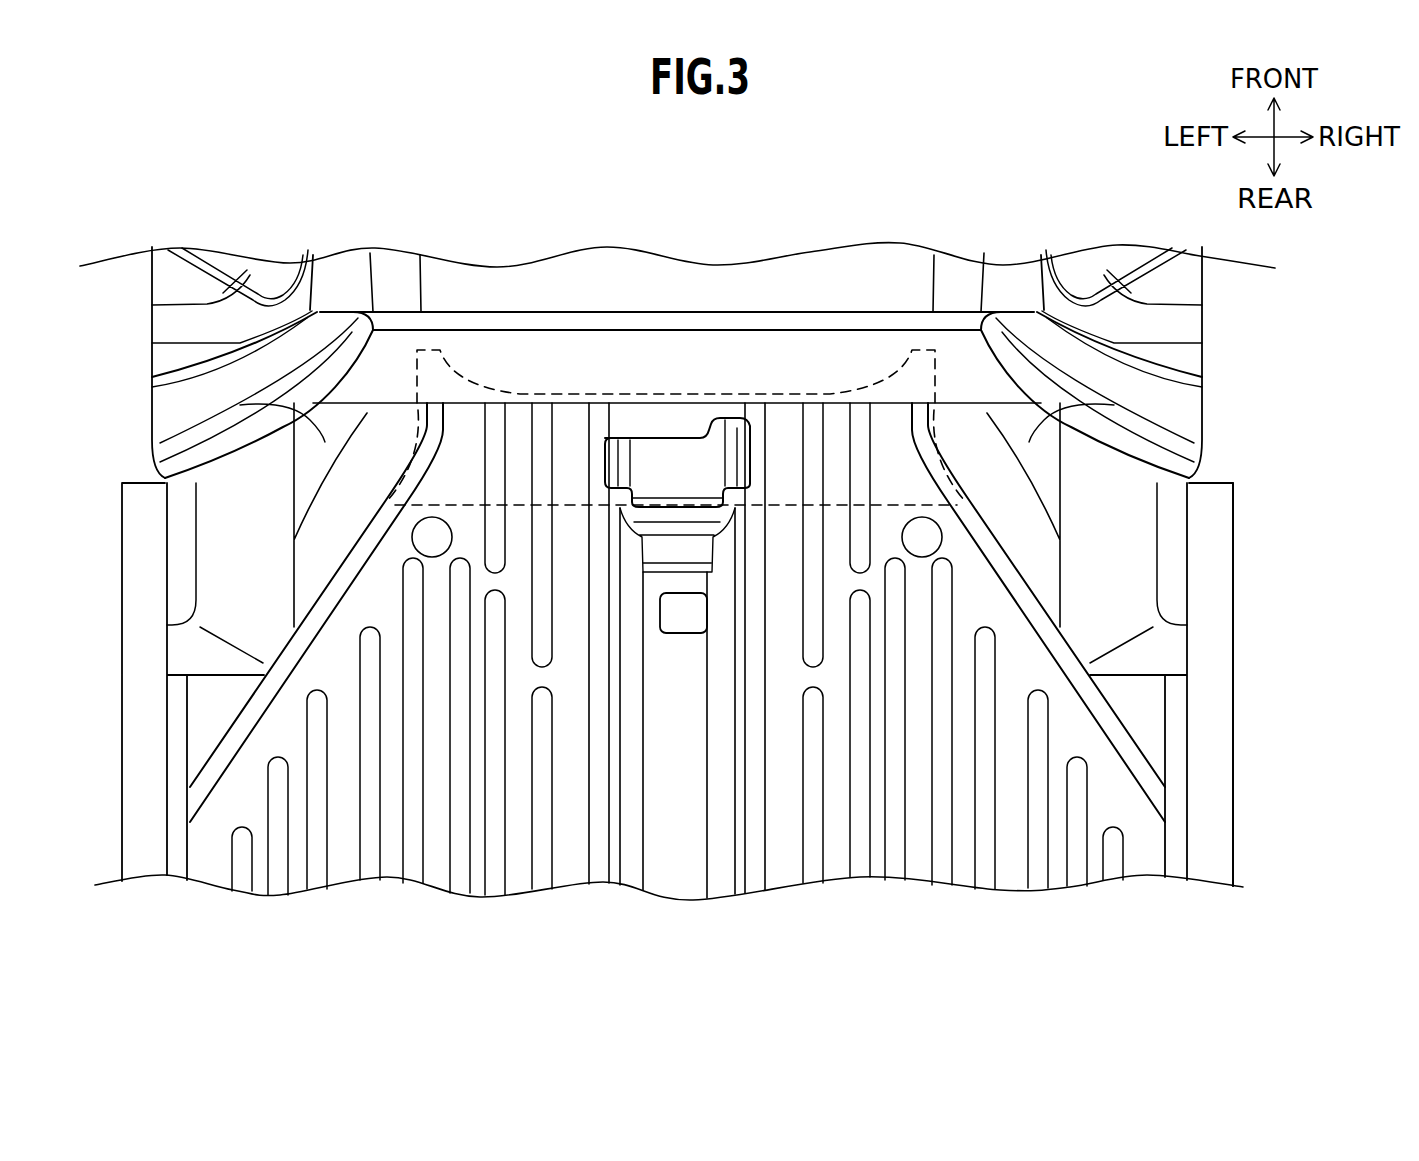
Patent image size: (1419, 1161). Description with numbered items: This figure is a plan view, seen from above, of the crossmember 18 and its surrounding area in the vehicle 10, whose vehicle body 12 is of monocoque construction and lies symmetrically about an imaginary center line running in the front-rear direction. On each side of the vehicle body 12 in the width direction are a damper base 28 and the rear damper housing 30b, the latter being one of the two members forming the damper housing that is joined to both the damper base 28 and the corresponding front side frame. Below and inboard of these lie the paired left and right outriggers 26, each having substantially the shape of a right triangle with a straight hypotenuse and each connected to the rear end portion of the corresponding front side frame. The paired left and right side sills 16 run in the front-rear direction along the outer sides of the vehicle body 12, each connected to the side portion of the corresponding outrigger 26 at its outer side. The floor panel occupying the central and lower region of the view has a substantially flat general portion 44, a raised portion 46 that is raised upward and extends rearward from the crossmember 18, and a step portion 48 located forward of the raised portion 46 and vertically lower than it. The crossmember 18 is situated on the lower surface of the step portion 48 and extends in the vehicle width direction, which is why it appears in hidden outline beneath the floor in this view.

The vehicle 10 is at (169, 183).
The vehicle body 12 is at (1256, 587).
The side sill 16 is at (98, 801).
The crossmember 18 is at (657, 400).
The outrigger 26 is at (160, 428).
The damper base 28 is at (152, 305).
The rear damper housing 30b is at (175, 401).
The general portion 44 is at (1005, 857).
The raised portion 46 is at (668, 862).
The step portion 48 is at (782, 427).